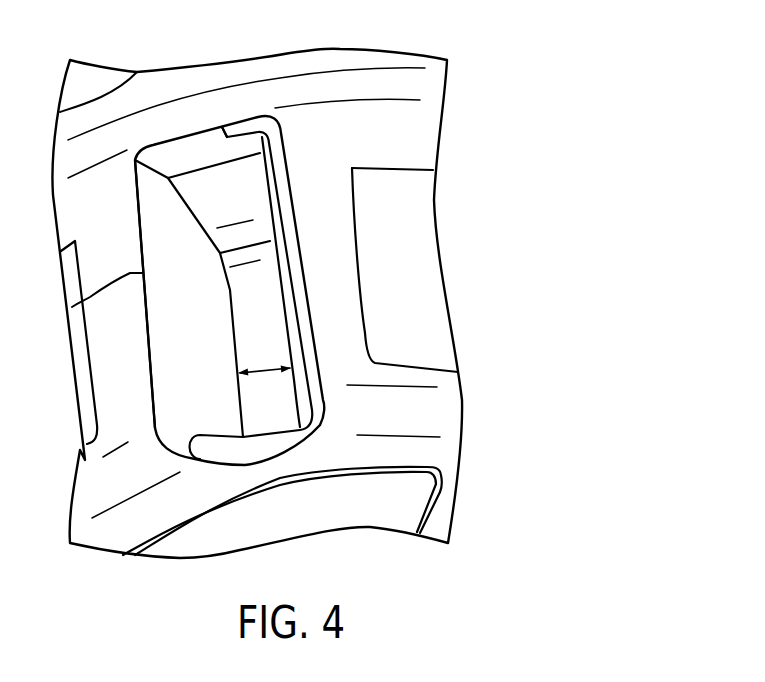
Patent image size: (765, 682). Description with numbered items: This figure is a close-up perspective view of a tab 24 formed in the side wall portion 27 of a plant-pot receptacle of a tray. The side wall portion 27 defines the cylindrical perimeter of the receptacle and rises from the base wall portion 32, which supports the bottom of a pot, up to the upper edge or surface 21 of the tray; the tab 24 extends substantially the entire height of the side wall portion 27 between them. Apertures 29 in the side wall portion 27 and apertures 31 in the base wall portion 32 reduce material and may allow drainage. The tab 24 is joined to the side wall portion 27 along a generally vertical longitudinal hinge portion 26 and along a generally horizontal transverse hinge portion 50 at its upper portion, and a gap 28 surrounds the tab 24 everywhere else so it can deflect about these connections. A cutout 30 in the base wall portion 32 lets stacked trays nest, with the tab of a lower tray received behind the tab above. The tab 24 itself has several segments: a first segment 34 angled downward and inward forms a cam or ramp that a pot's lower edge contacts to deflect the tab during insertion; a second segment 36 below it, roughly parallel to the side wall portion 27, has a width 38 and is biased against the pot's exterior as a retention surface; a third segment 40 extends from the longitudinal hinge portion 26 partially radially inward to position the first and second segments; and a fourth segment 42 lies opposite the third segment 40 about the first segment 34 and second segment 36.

The upper edge or surface 21 is at (318, 62).
The tab 24 is at (322, 318).
The longitudinal hinge portion 26 is at (72, 307).
The side wall portion 27 is at (103, 372).
The gap 28 is at (193, 143).
The aperture 29 is at (408, 170).
The cutout 30 is at (263, 450).
The aperture 31 is at (425, 492).
The base wall portion 32 is at (173, 502).
The first segment 34 is at (233, 200).
The second segment 36 is at (266, 325).
The width 38 is at (262, 372).
The third segment 40 is at (199, 340).
The fourth segment 42 is at (285, 295).
The transverse hinge portion 50 is at (213, 127).